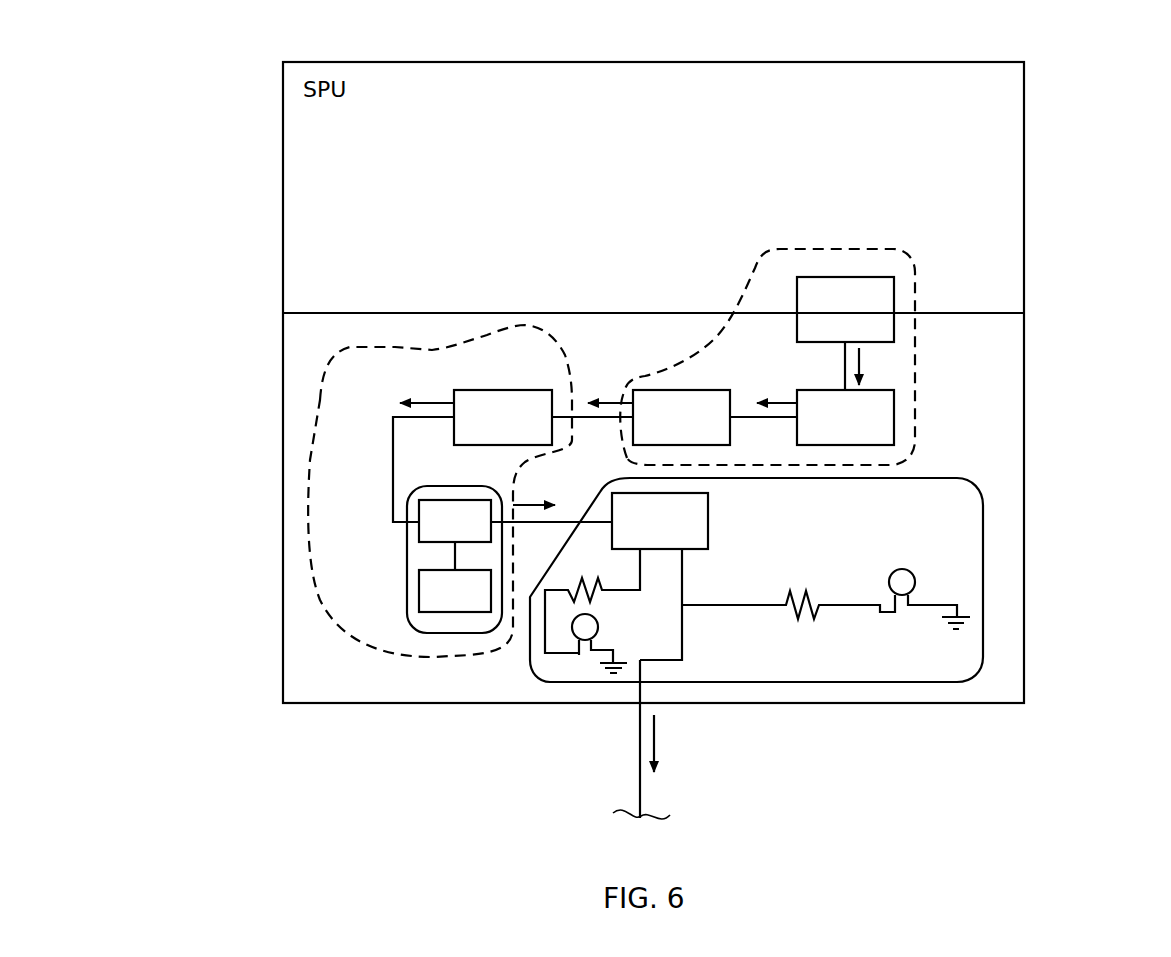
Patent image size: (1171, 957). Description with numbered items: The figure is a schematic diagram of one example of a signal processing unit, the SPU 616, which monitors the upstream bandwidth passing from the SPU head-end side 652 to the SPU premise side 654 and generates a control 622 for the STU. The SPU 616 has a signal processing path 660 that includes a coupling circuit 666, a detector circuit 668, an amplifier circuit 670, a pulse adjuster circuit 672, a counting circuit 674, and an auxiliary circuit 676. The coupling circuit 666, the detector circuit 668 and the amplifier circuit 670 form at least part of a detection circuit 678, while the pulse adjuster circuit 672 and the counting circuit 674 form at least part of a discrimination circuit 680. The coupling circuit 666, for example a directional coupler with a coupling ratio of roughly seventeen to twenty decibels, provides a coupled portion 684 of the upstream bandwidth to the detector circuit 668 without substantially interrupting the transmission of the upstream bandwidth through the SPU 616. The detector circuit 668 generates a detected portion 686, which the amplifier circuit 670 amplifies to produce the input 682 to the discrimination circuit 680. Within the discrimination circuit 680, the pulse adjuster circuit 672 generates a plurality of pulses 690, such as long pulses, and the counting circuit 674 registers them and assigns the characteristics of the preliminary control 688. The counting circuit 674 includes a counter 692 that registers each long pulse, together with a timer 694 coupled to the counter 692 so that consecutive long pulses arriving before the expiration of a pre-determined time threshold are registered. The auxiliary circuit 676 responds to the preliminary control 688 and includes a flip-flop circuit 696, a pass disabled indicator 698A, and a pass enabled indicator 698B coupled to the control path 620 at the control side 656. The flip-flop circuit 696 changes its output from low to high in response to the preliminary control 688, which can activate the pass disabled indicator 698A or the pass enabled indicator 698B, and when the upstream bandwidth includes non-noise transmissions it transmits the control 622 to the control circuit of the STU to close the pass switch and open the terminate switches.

The SPU 616 is at (832, 61).
The control path 620 is at (641, 792).
The control 622 is at (658, 735).
The SPU head-end side 652 is at (268, 296).
The SPU premise side 654 is at (1037, 297).
The control side 656 is at (622, 748).
The signal processing path 660 is at (993, 441).
The coupling circuit 666 is at (845, 309).
The detector circuit 668 is at (845, 393).
The amplifier circuit 670 is at (715, 417).
The pulse adjuster circuit 672 is at (503, 417).
The counting circuit 674 is at (410, 480).
The auxiliary circuit 676 is at (806, 683).
The detection circuit 678 is at (857, 248).
The discrimination circuit 680 is at (433, 350).
The digital signal 682 is at (608, 400).
The coupled portion 684 is at (862, 362).
The detected portion 686 is at (783, 402).
The preliminary control 688 is at (527, 505).
The plurality of pulses 690 is at (431, 400).
The counter 692 is at (455, 535).
The timer 694 is at (455, 591).
The flip-flop circuit 696 is at (660, 521).
The pass disabled indicator 698A is at (585, 660).
The pass enabled indicator 698B is at (908, 640).